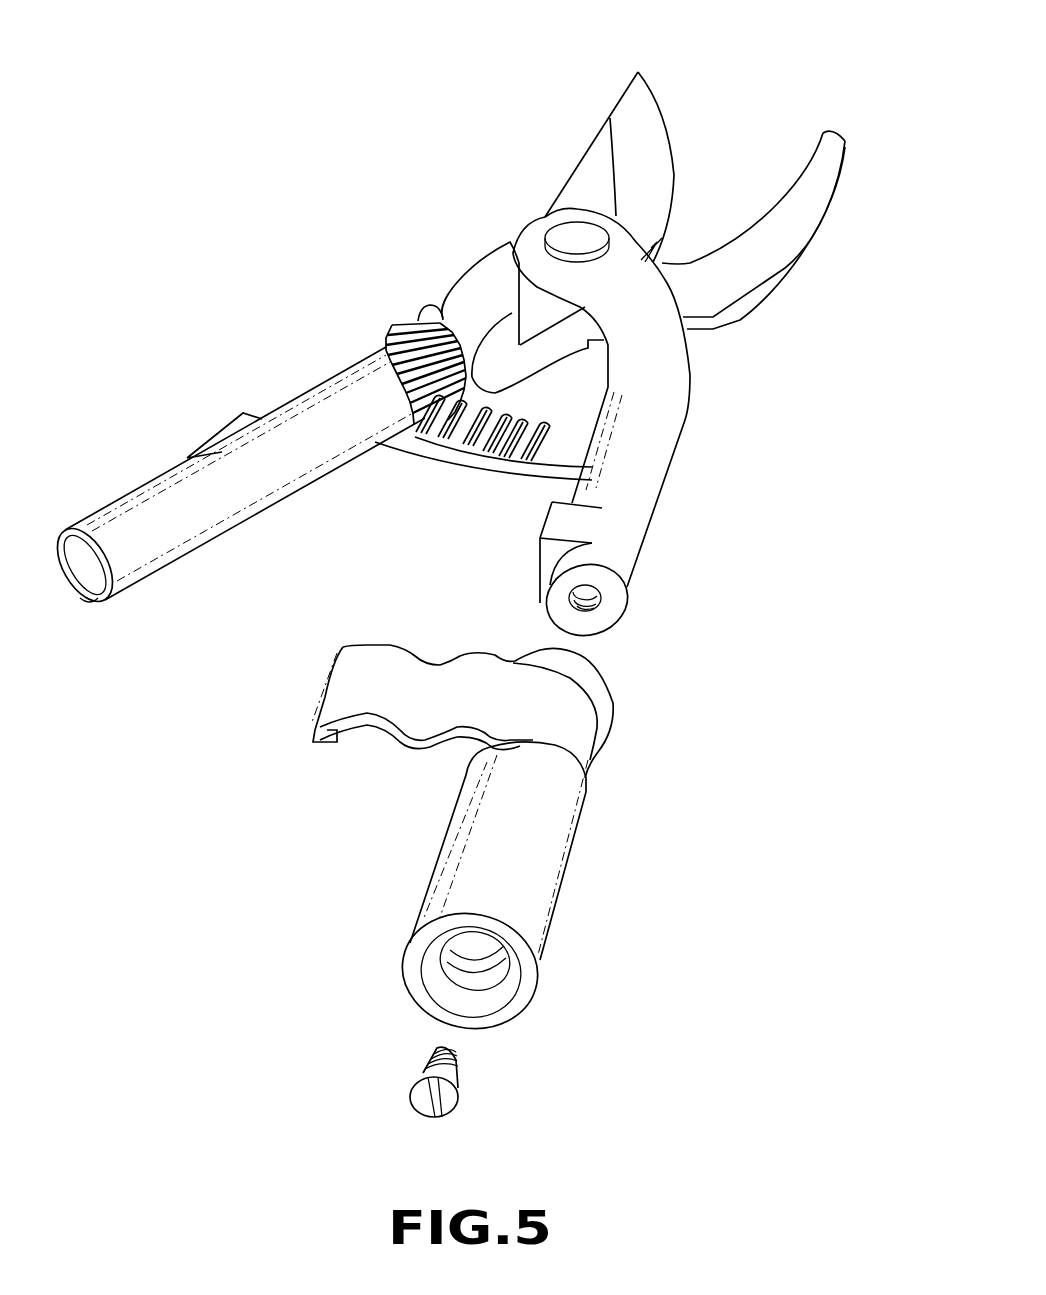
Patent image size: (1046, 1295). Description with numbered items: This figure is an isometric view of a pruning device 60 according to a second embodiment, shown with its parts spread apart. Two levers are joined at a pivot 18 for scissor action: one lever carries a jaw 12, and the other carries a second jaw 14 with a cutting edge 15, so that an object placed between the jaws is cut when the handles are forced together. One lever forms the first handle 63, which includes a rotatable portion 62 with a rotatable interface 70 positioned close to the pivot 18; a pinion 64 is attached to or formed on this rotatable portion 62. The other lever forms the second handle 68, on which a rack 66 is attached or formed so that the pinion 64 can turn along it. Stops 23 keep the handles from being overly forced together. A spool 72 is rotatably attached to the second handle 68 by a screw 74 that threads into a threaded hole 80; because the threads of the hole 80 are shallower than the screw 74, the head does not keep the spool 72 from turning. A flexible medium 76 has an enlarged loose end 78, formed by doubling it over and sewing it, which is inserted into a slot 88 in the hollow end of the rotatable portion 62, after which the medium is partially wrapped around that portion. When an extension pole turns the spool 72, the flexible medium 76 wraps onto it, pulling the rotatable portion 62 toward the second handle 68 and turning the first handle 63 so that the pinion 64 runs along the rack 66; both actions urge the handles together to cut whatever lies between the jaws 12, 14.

The pruning device 60 is at (772, 54).
The jaw 12 is at (802, 212).
The second jaw 14 is at (597, 177).
The cutting edge 15 is at (675, 147).
The pivot 18 is at (575, 233).
The stop 23 is at (540, 557).
The rotatable portion 62 is at (310, 417).
The first handle 63 is at (478, 292).
The pinion 64 is at (413, 357).
The rack 66 is at (478, 457).
The second handle 68 is at (634, 470).
The rotatable interface 70 is at (436, 327).
The spool 72 is at (533, 895).
The screw 74 is at (450, 1113).
The flexible medium 76 is at (377, 663).
The loose end 78 is at (330, 735).
The threaded hole 80 is at (597, 607).
The slot 88 is at (92, 592).